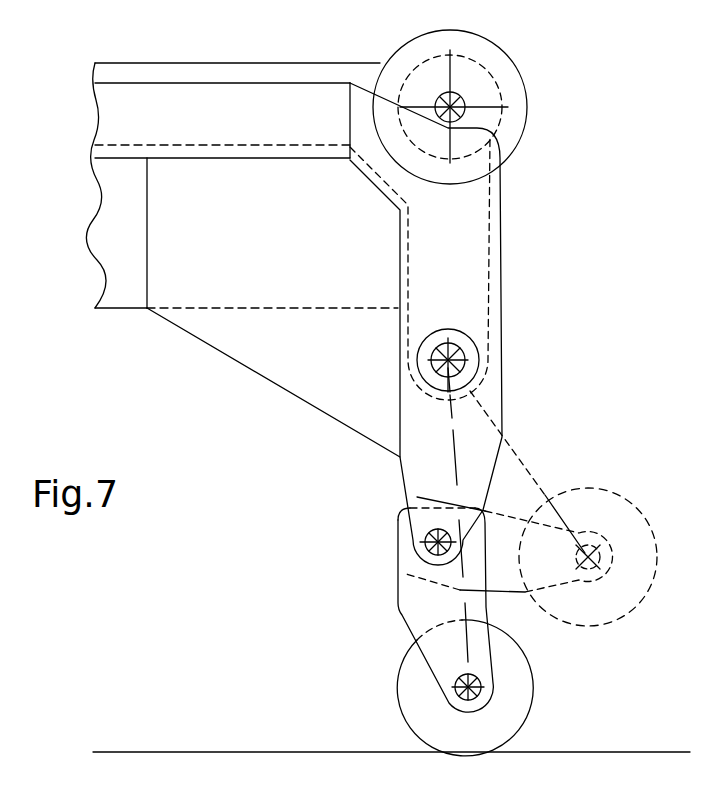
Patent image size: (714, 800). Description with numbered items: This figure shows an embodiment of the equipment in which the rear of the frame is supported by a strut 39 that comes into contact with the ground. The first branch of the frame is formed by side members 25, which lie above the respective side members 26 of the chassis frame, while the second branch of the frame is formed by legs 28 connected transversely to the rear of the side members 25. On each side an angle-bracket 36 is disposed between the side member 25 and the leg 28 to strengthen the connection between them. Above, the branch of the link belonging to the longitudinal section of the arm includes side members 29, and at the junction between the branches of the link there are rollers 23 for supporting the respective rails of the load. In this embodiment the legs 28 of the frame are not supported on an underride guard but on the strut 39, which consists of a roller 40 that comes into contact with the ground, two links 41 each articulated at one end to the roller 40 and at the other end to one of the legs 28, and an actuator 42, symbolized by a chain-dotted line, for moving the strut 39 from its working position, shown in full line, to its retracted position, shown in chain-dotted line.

The roller 23 is at (490, 50).
The side member 25 is at (233, 166).
The side member of the chassis frame 26 is at (192, 297).
The leg 28 is at (410, 425).
The side member of the link 29 is at (250, 72).
The angle-bracket 36 is at (253, 360).
The strut 39 is at (444, 622).
The roller 40 is at (527, 685).
The link 41 is at (412, 592).
The actuator 42 is at (457, 478).